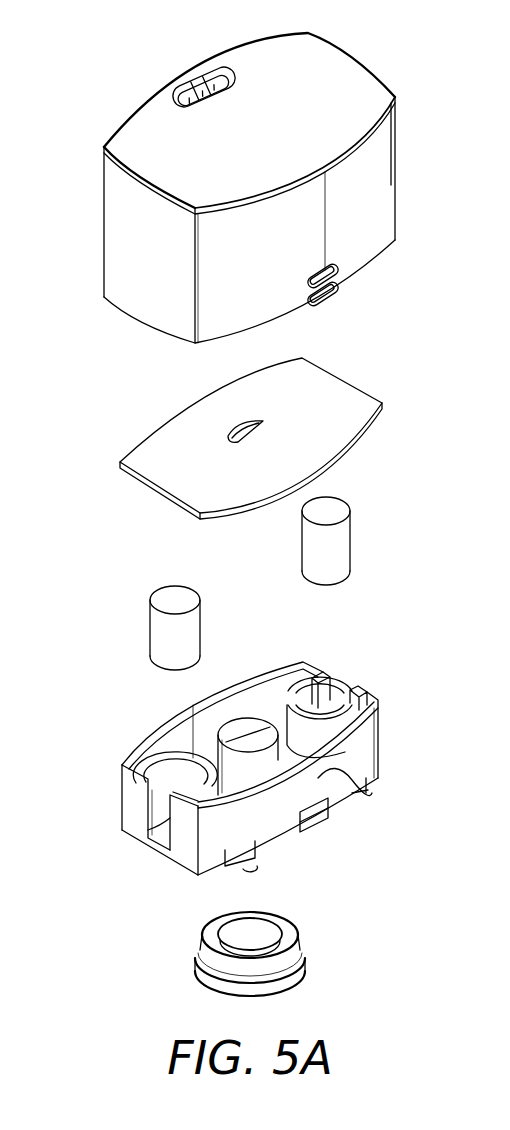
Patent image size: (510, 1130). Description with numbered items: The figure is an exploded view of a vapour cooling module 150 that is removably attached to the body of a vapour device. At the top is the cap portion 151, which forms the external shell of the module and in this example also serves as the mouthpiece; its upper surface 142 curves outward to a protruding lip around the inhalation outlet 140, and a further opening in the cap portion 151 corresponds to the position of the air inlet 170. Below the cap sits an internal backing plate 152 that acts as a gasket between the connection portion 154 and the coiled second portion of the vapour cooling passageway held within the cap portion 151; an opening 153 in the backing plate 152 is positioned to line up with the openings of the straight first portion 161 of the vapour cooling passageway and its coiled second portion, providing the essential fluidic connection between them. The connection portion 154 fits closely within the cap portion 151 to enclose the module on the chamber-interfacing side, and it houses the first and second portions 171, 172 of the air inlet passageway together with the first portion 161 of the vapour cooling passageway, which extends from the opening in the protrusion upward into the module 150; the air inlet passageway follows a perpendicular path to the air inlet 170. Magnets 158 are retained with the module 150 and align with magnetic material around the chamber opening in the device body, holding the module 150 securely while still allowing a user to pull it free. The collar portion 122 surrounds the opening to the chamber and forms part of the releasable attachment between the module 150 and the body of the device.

The vapour cooling module 150 is at (84, 545).
The cap portion 151 is at (104, 212).
The inhalation outlet 140 is at (199, 90).
The upper surface of the cap portion 142 is at (338, 70).
The air inlet 170 is at (341, 269).
The internal backing plate 152 is at (343, 374).
The opening in the backing plate 153 is at (233, 422).
The magnets 158 is at (150, 630).
The connection portion 154 is at (244, 765).
The first portion of the vapour cooling passageway 161 is at (248, 732).
The first portion of the air inlet passageway 171 is at (315, 716).
The second portion of the air inlet passageway 172 is at (352, 778).
The collar portion 122 is at (298, 921).